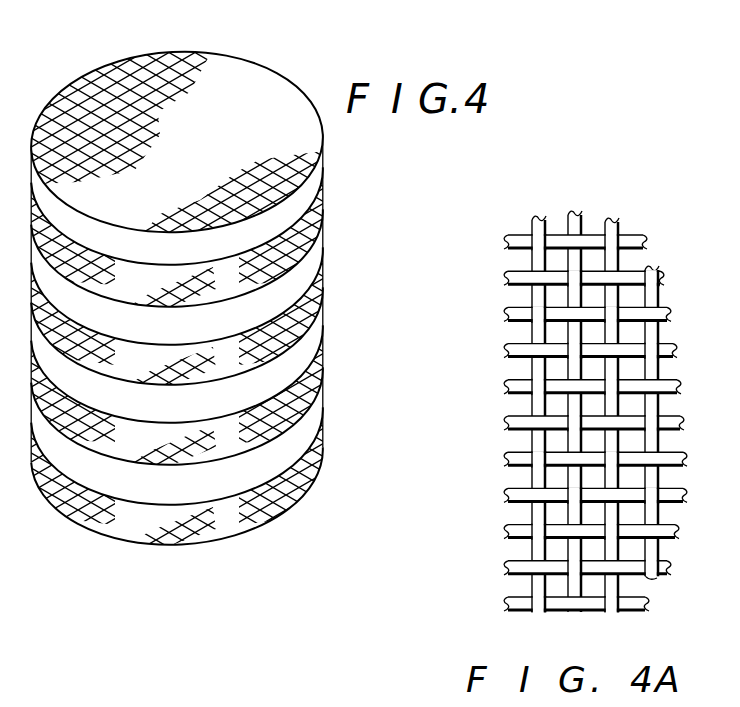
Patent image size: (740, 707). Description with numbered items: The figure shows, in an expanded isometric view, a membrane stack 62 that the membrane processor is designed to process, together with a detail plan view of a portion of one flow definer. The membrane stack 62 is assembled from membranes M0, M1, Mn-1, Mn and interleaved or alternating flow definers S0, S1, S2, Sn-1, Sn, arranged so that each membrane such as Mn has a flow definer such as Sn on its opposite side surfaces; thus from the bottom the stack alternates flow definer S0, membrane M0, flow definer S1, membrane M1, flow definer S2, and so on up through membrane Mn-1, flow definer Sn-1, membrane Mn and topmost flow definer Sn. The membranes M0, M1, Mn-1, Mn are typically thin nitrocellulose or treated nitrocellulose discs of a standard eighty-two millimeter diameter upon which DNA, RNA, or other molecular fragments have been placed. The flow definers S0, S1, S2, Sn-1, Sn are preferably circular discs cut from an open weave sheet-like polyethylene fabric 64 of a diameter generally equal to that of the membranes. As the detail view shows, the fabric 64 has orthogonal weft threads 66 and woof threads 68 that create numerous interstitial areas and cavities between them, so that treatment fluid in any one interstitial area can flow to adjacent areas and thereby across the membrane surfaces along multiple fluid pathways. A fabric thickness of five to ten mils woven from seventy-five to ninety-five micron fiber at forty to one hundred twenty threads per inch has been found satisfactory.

In FIG. 4, the membrane stack 62 is at (209, 281).
In FIG. 4A, the open weave sheet-like polyethylene fabric 64 is at (590, 389).
In FIG. 4A, the weft threads 66 is at (574, 220).
In FIG. 4A, the woof threads 68 is at (503, 241).
In FIG. 4, the flow definer Sn is at (325, 137).
In FIG. 4, the membrane Mn is at (323, 180).
In FIG. 4, the flow definer Sn-1 is at (322, 212).
In FIG. 4, the membrane Mn-1 is at (325, 253).
In FIG. 4, the flow definer S2 is at (322, 287).
In FIG. 4, the membrane M1 is at (322, 337).
In FIG. 4, the flow definer S1 is at (322, 373).
In FIG. 4, the membrane M0 is at (322, 423).
In FIG. 4, the flow definer S0 is at (322, 463).